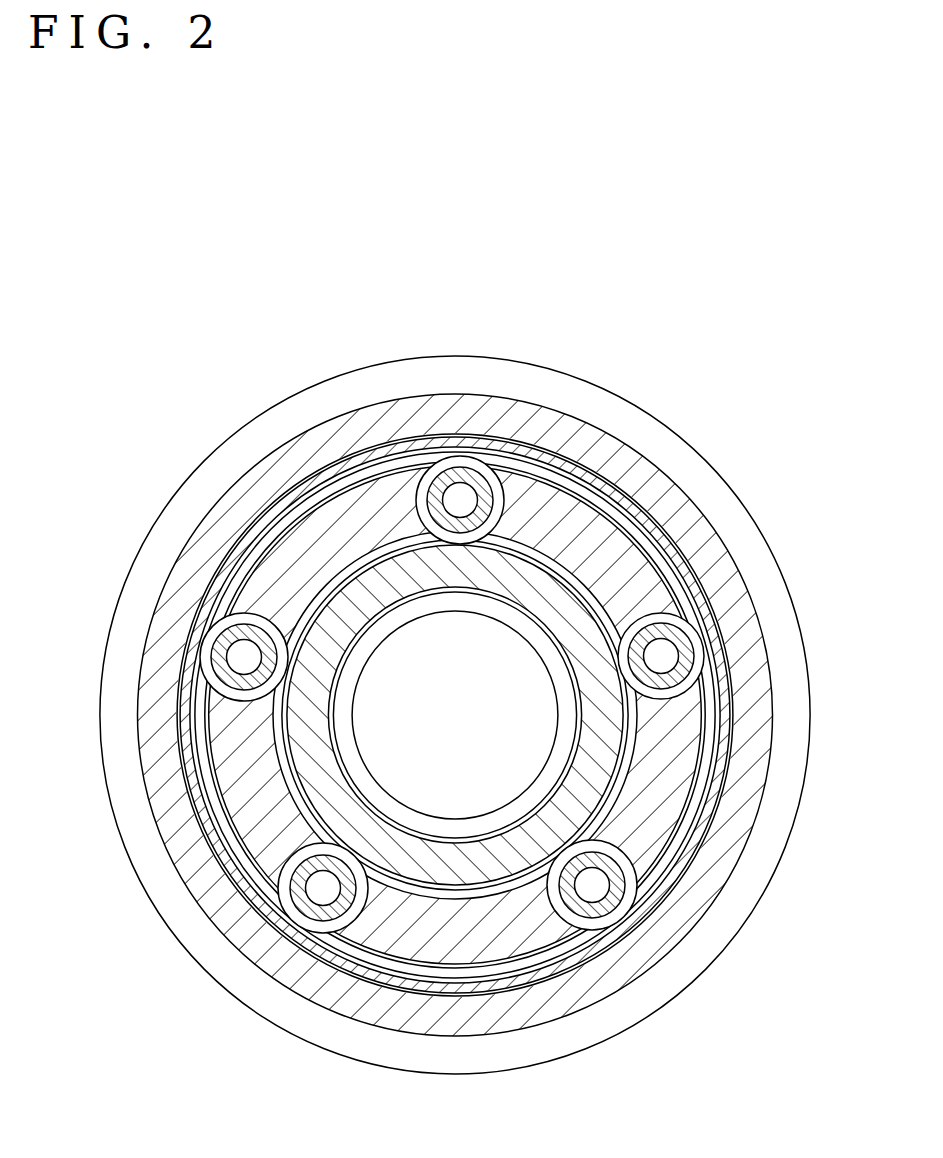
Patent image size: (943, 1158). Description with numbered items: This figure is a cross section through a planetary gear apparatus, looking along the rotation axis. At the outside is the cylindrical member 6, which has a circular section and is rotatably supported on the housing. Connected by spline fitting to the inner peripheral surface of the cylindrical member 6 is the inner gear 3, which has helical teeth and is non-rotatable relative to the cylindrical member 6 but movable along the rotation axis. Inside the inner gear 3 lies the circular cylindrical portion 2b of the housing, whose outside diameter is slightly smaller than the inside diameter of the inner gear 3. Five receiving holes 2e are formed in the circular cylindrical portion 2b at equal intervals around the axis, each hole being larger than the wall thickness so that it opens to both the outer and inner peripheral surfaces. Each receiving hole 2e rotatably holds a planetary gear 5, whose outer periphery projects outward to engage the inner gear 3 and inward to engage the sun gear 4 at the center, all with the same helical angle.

The circular cylindrical portion 2b is at (250, 783).
The receiving holes 2e is at (433, 477).
The inner gear 3 is at (585, 465).
The sun gear 4 is at (540, 582).
The planetary gears 5 is at (450, 475).
The cylindrical member 6 is at (700, 447).